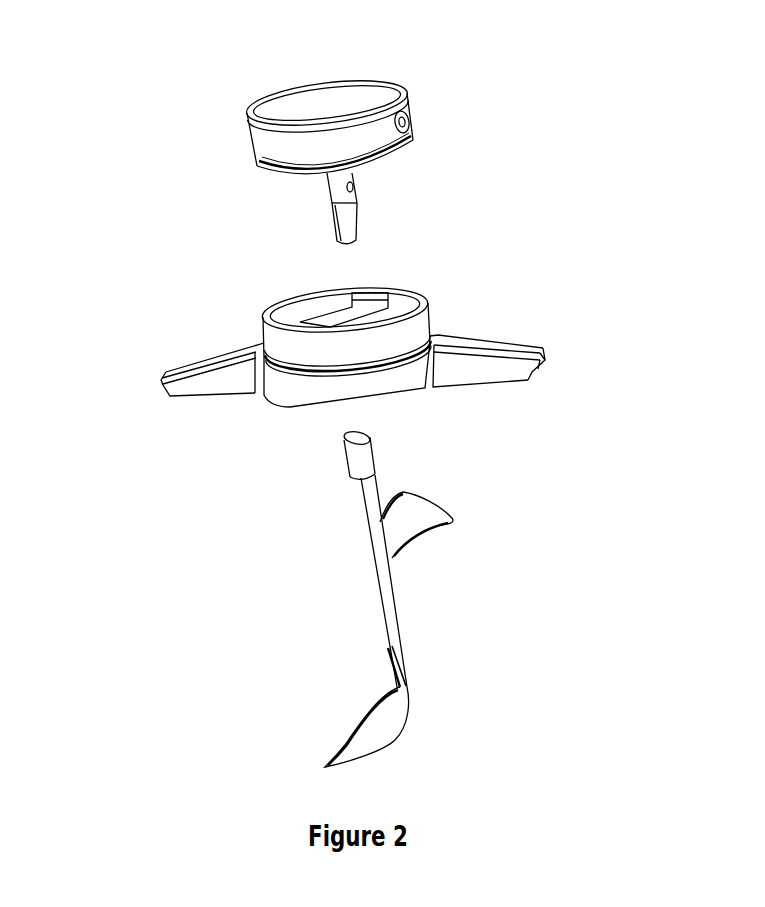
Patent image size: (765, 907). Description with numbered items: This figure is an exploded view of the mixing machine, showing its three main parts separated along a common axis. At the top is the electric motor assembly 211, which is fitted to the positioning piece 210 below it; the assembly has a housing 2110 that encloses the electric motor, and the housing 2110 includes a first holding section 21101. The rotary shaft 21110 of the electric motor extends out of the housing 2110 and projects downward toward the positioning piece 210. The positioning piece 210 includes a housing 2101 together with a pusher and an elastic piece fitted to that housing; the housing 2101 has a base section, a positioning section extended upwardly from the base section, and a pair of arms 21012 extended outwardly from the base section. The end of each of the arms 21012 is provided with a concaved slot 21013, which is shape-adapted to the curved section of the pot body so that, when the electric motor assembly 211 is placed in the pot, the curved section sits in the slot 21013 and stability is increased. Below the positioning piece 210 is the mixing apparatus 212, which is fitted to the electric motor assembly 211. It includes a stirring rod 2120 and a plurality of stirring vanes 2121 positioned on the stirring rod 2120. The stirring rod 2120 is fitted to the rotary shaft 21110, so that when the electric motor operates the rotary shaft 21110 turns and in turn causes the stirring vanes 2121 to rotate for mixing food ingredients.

The electric motor assembly 211 is at (345, 88).
The housing 2110 is at (253, 146).
The first holding section 21101 is at (310, 176).
The rotary shaft 21110 is at (357, 217).
The positioning piece 210 is at (466, 337).
The housing 2101 is at (302, 392).
The arms 21012 is at (475, 372).
The concaved slot 21013 is at (543, 362).
The mixing apparatus 212 is at (382, 598).
The stirring rod 2120 is at (392, 620).
The stirring vanes 2121 is at (373, 732).